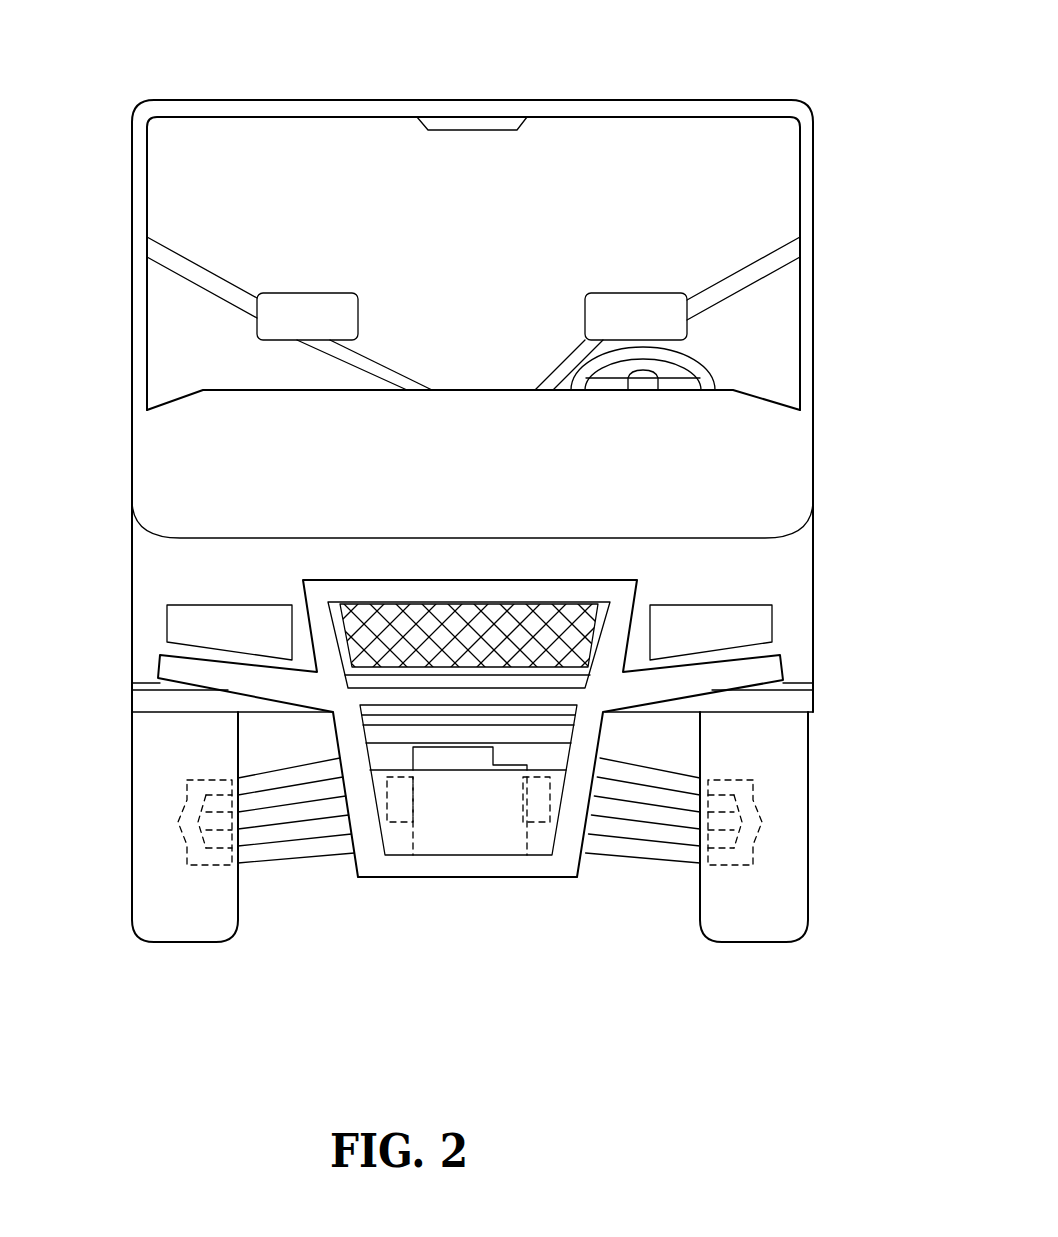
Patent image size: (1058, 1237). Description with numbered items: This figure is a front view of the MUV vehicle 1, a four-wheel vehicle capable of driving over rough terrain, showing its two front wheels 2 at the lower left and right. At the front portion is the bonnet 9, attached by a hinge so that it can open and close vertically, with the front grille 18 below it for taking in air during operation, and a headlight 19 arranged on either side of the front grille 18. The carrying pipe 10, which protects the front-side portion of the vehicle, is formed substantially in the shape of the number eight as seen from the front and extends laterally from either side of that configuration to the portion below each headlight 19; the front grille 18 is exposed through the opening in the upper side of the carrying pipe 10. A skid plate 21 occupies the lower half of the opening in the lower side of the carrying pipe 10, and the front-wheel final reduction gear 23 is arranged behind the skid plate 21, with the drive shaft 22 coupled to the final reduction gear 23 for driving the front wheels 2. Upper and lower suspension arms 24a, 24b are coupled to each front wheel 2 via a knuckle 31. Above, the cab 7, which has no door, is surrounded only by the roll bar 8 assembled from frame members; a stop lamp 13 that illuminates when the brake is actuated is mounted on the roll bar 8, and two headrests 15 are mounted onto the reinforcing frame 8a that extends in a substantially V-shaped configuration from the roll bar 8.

The MUV vehicle 1 is at (884, 68).
The front wheel 2 is at (182, 930).
The cab 7 is at (484, 229).
The roll bar 8 is at (815, 191).
The reinforcing frame 8a is at (205, 258).
The bonnet 9 is at (770, 470).
The carrying pipe 10 is at (235, 677).
The stop lamp 13 is at (522, 117).
The headrest 15 is at (309, 292).
The front grille 18 is at (553, 620).
The headlight 19 is at (170, 627).
The skid plate 21 is at (397, 843).
The drive shaft 22 is at (294, 812).
The front-wheel final reduction gear 23 is at (455, 825).
The upper suspension arm 24a is at (266, 778).
The lower suspension arm 24b is at (323, 852).
The knuckle 31 is at (178, 822).